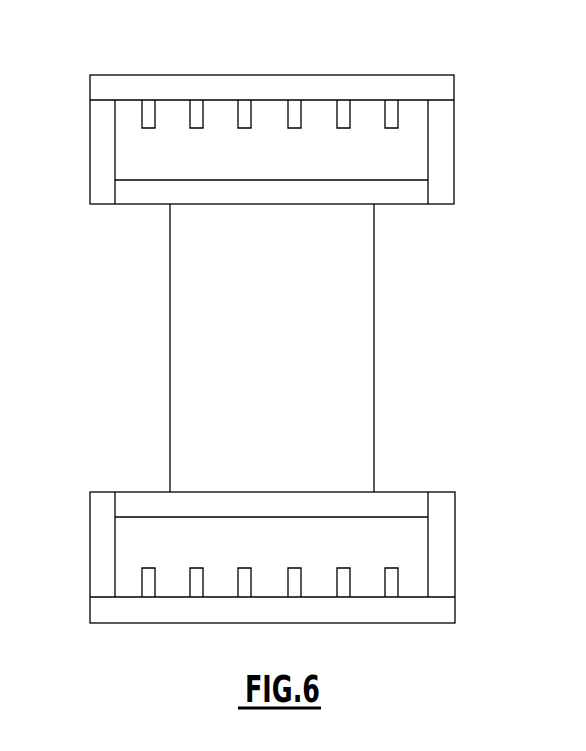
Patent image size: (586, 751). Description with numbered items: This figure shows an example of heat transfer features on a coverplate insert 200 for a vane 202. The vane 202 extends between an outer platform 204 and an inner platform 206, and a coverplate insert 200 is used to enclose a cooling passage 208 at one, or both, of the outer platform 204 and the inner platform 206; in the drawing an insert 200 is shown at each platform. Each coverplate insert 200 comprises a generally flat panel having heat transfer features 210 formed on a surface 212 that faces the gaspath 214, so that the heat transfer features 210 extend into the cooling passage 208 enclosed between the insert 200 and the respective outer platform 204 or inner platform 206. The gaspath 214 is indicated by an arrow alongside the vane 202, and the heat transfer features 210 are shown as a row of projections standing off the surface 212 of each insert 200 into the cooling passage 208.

The coverplate insert 200 is at (387, 75).
The vane 202 is at (375, 353).
The outer platform 204 is at (115, 192).
The inner platform 206 is at (115, 505).
The cooling passage 208 is at (137, 156).
The heat transfer features 210 is at (148, 117).
The surface 212 is at (135, 106).
The gaspath 214 is at (222, 235).